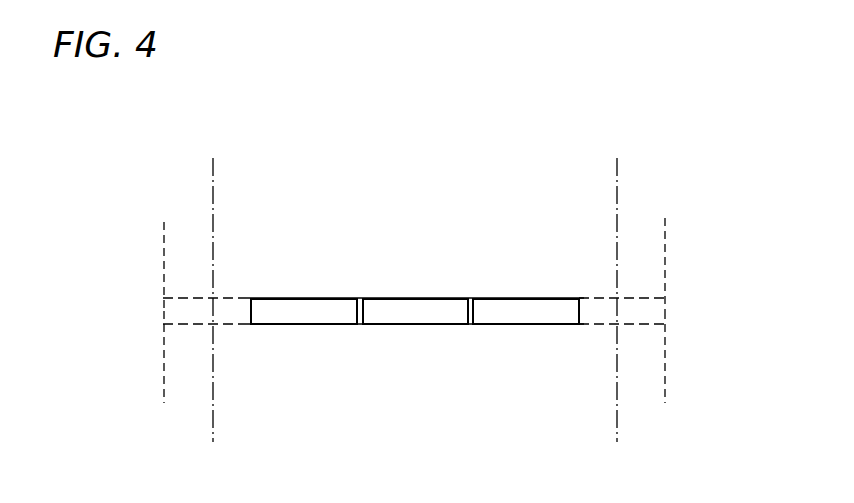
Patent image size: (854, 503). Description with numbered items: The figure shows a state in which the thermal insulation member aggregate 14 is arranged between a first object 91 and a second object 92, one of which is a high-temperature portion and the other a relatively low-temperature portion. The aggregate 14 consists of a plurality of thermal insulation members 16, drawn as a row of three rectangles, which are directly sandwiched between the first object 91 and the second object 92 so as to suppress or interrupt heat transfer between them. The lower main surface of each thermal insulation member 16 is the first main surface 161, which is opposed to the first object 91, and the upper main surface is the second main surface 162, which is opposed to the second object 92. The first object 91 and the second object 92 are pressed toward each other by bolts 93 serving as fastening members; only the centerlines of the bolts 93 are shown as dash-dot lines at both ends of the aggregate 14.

The thermal insulation member aggregate 14 is at (230, 307).
The thermal insulation member 16 is at (441, 298).
The first main surface 161 is at (294, 326).
The second main surface 162 is at (291, 297).
The first object 91 is at (665, 358).
The second object 92 is at (666, 275).
The bolt 93 is at (212, 178).